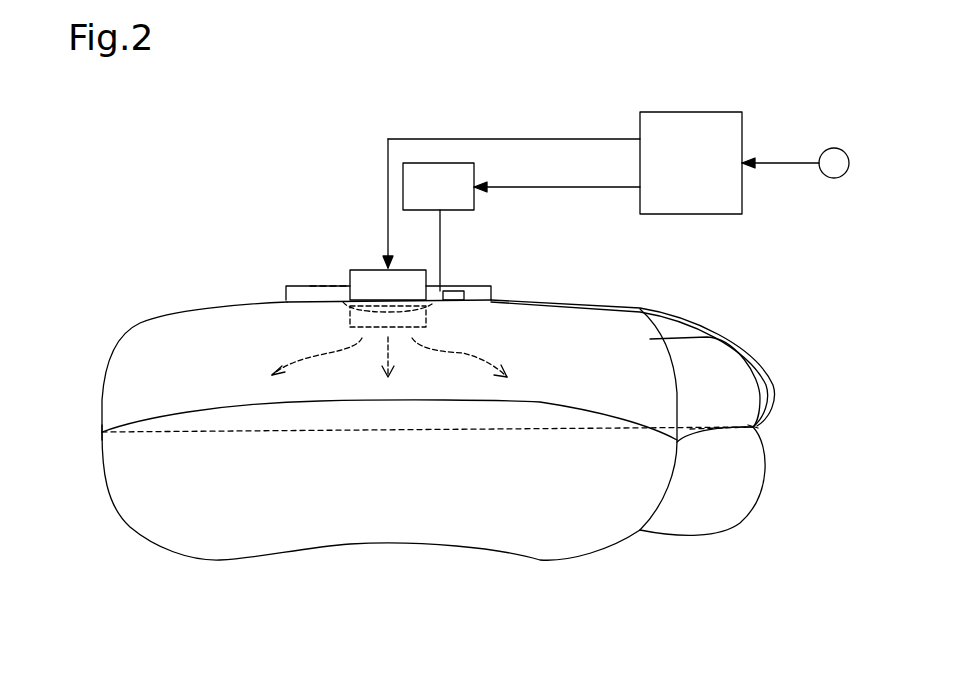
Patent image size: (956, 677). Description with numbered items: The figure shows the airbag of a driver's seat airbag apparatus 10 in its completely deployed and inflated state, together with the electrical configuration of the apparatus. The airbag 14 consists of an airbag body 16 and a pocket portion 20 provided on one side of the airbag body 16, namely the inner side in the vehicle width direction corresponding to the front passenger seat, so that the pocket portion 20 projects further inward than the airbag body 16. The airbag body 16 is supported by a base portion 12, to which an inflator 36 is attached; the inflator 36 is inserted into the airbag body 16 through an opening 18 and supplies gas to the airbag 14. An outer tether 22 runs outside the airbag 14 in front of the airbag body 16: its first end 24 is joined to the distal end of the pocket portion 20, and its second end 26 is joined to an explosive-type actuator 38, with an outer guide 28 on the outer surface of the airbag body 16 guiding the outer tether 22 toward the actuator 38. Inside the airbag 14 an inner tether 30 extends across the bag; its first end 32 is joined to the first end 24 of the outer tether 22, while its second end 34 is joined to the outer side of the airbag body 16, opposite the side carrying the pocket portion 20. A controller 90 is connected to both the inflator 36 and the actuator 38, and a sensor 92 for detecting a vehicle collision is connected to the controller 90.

The driver's seat airbag apparatus 10 is at (103, 541).
The base portion 12 is at (307, 285).
The airbag 14 is at (702, 590).
The airbag body 16 is at (560, 555).
The opening 18 is at (428, 322).
The pocket portion 20 is at (687, 527).
The outer tether 22 is at (640, 307).
The first end of the outer tether 24 is at (755, 427).
The second end of the outer tether 26 is at (440, 213).
The outer guide 28 is at (458, 289).
The inner tether 30 is at (417, 430).
The first end of the inner tether 32 is at (743, 430).
The second end of the inner tether 34 is at (103, 433).
The inflator 36 is at (367, 268).
The actuator 38 is at (477, 170).
The controller 90 is at (697, 112).
The sensor 92 is at (832, 147).